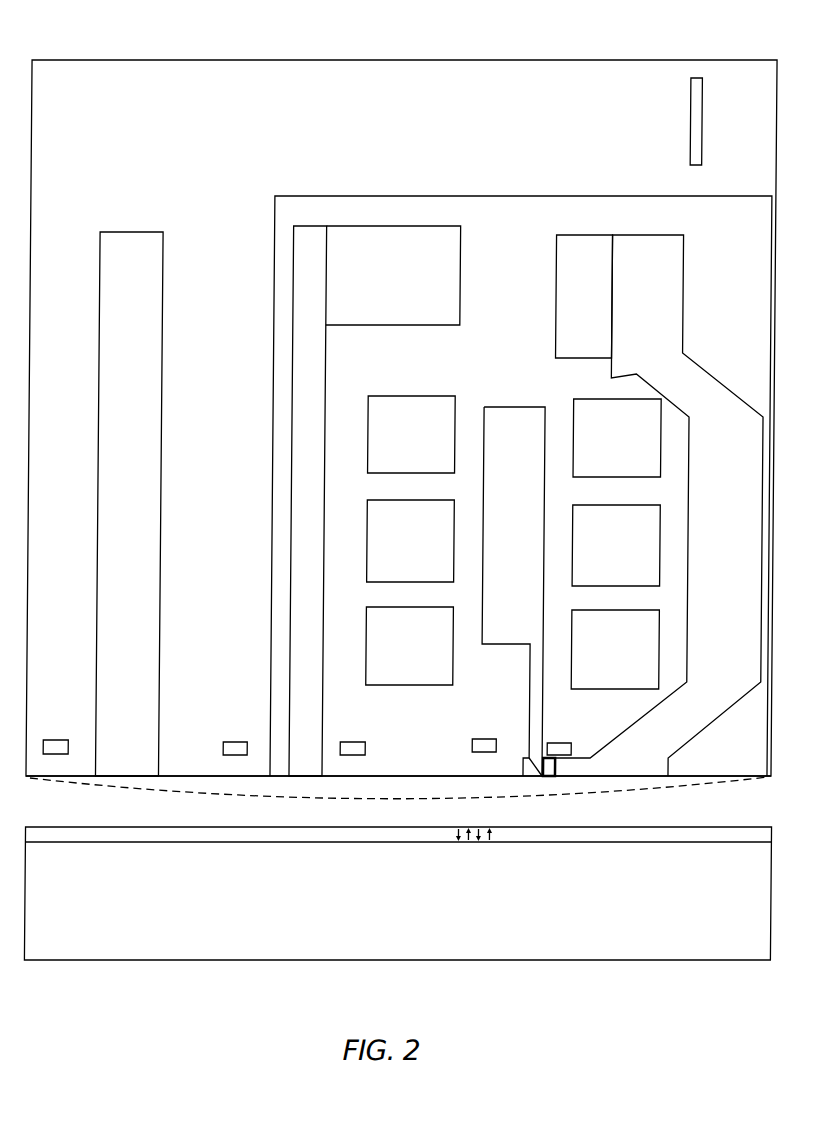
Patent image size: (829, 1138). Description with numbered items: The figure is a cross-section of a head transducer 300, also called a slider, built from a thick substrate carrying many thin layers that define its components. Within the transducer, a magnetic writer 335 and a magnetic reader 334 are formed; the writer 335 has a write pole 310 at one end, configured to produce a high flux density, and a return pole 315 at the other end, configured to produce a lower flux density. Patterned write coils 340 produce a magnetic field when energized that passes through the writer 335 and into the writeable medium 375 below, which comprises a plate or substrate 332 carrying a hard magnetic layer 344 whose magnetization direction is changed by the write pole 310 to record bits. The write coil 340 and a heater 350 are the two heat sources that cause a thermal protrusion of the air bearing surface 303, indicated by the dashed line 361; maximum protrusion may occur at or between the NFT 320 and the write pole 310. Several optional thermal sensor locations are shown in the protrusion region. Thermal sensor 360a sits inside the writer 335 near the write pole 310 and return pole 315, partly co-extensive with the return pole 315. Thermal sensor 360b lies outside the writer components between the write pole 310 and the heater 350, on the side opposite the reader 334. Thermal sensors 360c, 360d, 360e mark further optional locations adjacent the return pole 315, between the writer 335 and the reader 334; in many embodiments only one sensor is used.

The head transducer 300 is at (415, 39).
The air bearing surface 303 is at (33, 778).
The write pole 310 is at (512, 407).
The return pole 315 is at (292, 362).
The NFT 320 is at (552, 777).
The plate or substrate 332 is at (397, 893).
The magnetic reader 334 is at (164, 298).
The magnetic writer 335 is at (274, 167).
The write coil 340 is at (432, 380).
The hard magnetic layer 344 is at (716, 843).
The heater 350 is at (700, 112).
The thermal sensor 360a is at (479, 739).
The thermal sensor 360b is at (553, 743).
The thermal sensor 360c is at (55, 740).
The thermal sensor 360d is at (228, 742).
The thermal sensor 360e is at (350, 742).
The thermal protrusion 361 is at (690, 792).
The writeable medium 375 is at (196, 995).